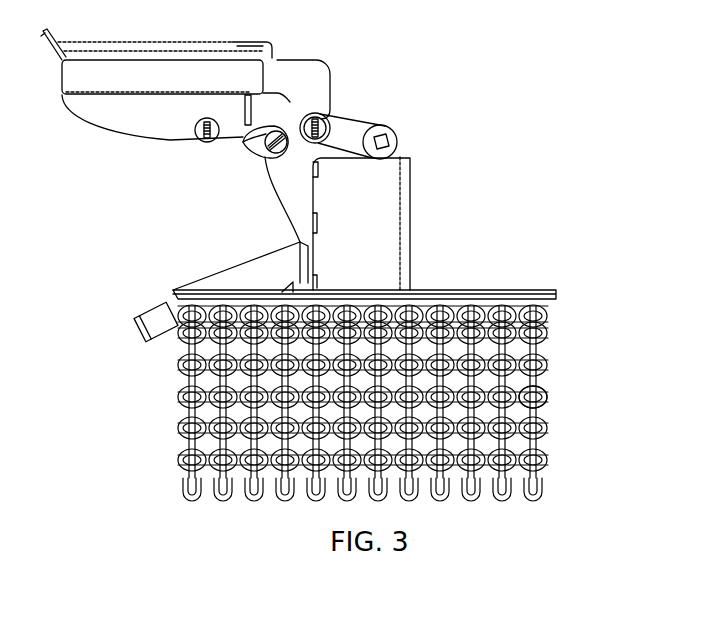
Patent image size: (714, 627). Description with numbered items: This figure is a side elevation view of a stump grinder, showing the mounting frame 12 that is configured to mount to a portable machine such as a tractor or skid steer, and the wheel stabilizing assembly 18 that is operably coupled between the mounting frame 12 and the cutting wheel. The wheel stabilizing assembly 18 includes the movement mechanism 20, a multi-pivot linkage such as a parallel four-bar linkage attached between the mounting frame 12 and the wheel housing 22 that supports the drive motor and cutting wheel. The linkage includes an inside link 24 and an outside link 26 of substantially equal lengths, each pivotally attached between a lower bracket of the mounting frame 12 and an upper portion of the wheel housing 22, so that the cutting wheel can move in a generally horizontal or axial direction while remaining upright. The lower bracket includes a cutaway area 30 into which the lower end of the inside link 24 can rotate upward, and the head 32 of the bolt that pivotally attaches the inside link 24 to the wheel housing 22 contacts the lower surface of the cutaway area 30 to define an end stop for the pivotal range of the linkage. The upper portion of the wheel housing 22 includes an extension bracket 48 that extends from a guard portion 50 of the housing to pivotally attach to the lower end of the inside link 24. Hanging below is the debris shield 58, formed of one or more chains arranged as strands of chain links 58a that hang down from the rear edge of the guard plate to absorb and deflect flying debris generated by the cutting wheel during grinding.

The mounting frame 12 is at (161, 39).
The wheel stabilizing assembly 18 is at (429, 97).
The movement mechanism 20 is at (390, 84).
The wheel housing 22 is at (419, 176).
The inside link 24 is at (253, 143).
The outside link 26 is at (353, 127).
The cutaway area 30 is at (258, 119).
The head 32 is at (270, 154).
The extension bracket 48 is at (290, 198).
The guard portion 50 is at (383, 223).
The debris shield 58 is at (541, 510).
The chain links 58a is at (541, 397).